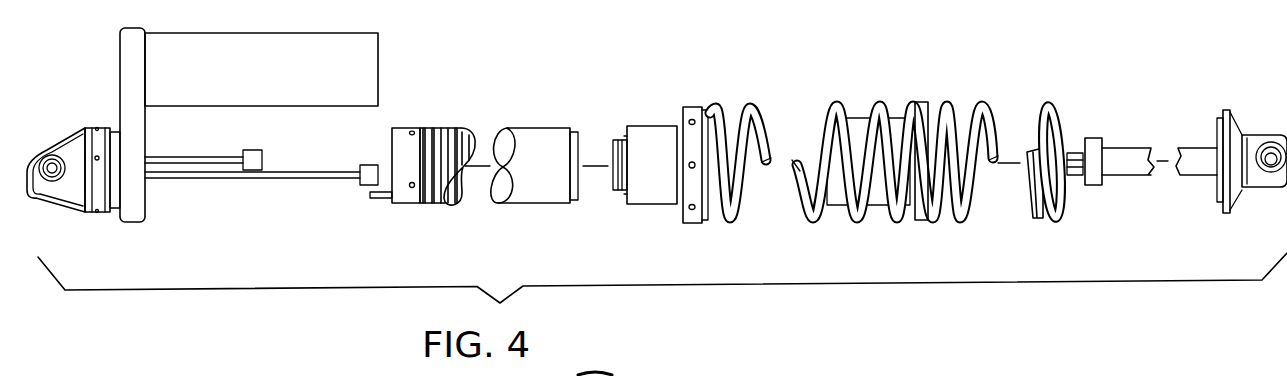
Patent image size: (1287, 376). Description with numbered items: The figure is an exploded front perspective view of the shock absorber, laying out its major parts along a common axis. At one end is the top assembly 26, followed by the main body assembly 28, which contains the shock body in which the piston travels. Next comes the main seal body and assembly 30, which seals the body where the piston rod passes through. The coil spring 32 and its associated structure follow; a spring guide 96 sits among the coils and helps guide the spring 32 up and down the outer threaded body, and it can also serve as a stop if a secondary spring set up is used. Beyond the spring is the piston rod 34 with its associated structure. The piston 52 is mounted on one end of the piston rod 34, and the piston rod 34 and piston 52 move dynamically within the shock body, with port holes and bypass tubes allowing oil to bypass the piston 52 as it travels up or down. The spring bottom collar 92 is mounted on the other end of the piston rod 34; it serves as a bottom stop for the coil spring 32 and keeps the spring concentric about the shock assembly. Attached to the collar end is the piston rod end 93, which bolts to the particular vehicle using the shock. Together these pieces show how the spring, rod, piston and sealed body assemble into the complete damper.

The top assembly 26 is at (398, 63).
The main body assembly 28 is at (532, 100).
The main seal body and assembly 30 is at (653, 220).
The coil spring 32 is at (750, 107).
The piston rod 34 is at (1123, 157).
The piston 52 is at (1092, 180).
The spring bottom collar 92 is at (1235, 197).
The piston rod end 93 is at (1265, 143).
The spring guide 96 is at (923, 212).